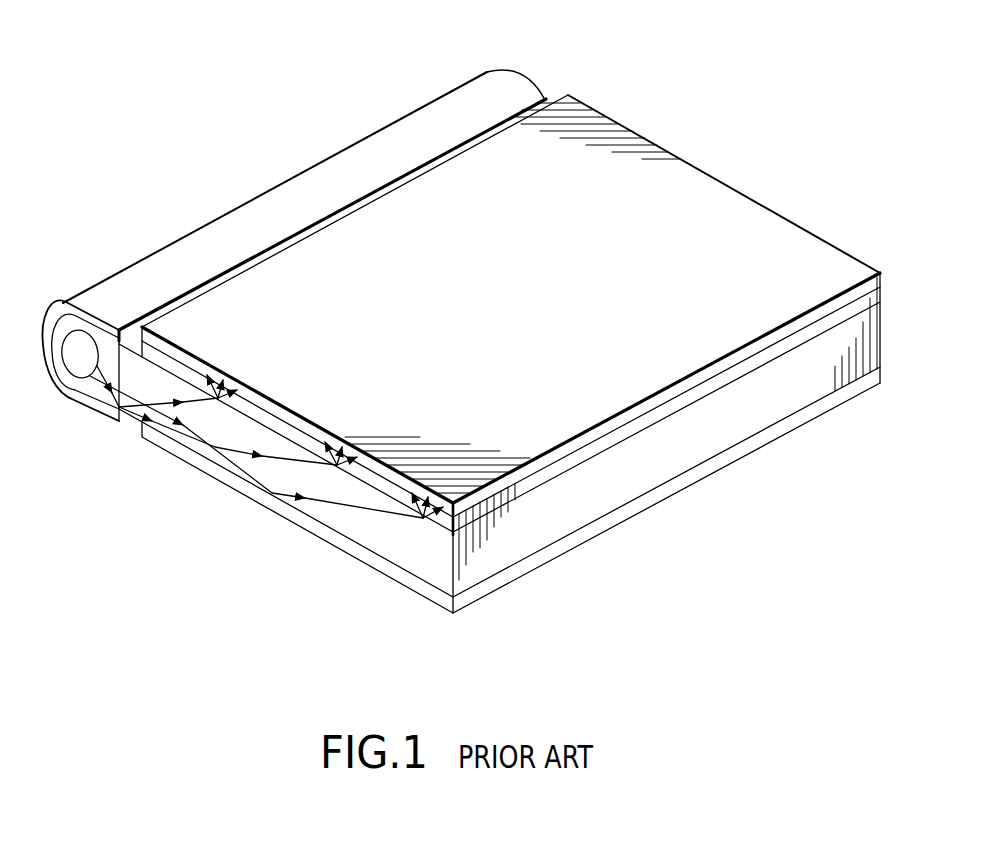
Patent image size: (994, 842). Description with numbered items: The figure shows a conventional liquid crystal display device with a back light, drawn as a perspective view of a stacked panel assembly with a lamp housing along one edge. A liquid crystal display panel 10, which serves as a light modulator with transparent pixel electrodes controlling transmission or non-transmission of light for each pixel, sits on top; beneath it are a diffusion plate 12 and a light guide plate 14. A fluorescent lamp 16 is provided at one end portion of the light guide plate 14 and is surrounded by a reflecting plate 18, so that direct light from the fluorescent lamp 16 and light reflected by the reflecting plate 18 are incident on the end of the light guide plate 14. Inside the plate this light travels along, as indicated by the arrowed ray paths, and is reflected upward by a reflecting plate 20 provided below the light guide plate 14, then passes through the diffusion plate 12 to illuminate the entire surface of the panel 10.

The liquid crystal display panel 10 is at (714, 372).
The diffusion plate 12 is at (578, 460).
The light guide plate 14 is at (765, 426).
The fluorescent lamp 16 is at (77, 378).
The reflecting plate 18 is at (95, 322).
The reflecting plate 20 is at (307, 523).